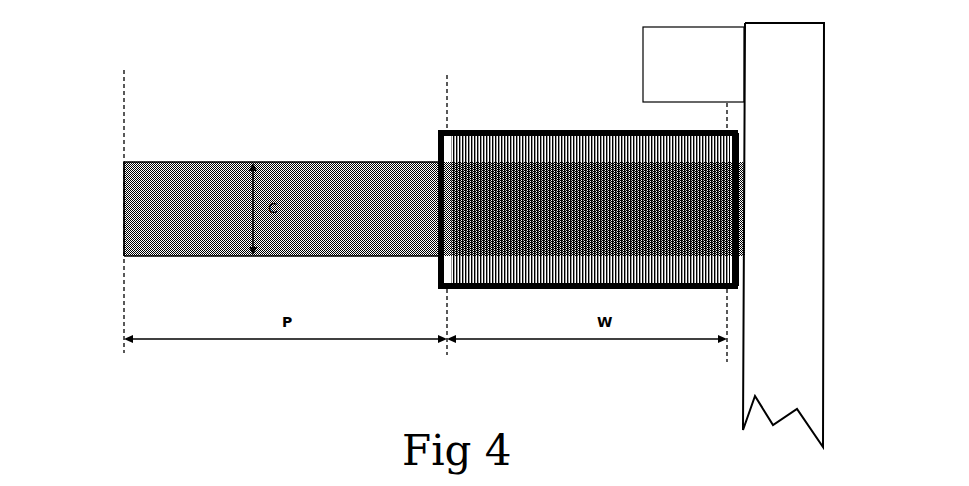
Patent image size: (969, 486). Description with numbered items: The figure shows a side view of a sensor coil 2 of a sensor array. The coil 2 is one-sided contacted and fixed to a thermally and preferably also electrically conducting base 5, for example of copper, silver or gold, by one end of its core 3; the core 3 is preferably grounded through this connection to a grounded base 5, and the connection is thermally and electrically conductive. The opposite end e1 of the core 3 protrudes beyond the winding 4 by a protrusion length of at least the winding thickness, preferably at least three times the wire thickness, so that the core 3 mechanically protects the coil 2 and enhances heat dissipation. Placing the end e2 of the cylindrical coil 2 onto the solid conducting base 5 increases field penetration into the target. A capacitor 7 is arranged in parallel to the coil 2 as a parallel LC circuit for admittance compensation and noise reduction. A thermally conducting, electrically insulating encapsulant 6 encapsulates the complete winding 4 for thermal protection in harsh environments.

The sensor coil 2 is at (588, 169).
The core 3 is at (434, 209).
The winding 4 is at (590, 195).
The base 5 is at (783, 235).
The encapsulant 6 is at (588, 186).
The capacitor 7 is at (693, 64).
The end of the core e1 is at (80, 209).
The end of the coil e2 is at (773, 209).